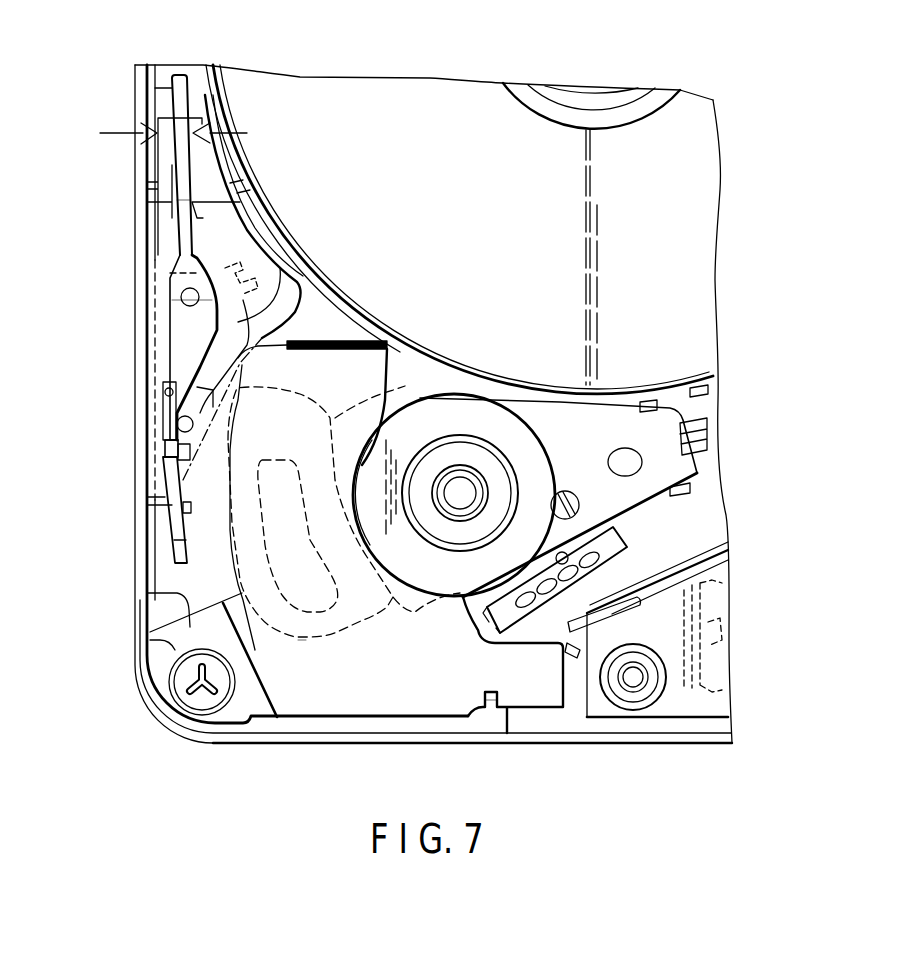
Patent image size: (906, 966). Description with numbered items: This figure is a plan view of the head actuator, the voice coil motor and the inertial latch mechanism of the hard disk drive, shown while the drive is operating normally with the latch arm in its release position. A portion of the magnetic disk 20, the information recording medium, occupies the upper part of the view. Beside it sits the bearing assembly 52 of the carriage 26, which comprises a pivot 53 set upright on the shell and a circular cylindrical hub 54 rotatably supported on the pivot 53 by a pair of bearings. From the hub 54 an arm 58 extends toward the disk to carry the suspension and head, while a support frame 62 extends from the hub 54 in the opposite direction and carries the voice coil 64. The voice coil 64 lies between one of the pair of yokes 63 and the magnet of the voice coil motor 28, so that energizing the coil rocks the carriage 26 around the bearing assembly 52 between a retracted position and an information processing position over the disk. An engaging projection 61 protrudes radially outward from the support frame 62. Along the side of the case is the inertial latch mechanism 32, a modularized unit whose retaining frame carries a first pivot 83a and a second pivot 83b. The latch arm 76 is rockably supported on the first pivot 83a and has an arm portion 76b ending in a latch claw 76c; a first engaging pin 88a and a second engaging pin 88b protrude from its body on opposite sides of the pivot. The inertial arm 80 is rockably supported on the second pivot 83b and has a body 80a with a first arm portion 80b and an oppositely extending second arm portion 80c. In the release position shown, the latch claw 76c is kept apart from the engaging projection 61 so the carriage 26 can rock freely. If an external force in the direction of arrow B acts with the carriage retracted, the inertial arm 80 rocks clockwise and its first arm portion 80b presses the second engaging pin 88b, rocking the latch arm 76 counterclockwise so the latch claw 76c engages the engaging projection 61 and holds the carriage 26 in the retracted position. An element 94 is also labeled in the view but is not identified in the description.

The magnetic disk 20 is at (694, 234).
The carriage 26 is at (590, 416).
The voice coil motor 28 is at (348, 676).
The inertial latch mechanism 32 is at (167, 361).
The bearing assembly 52 is at (447, 433).
The pivot 53 is at (480, 468).
The hub 54 is at (471, 412).
The arm 58 is at (623, 412).
The engaging projection 61 is at (202, 507).
The support frame 62 is at (414, 603).
The yokes 63 is at (465, 693).
The voice coil 64 is at (303, 620).
The latch arm 76 is at (157, 481).
The arm portion 76b is at (178, 513).
The latch claw 76c is at (176, 562).
The inertial arm 80 is at (188, 340).
The body 80a is at (178, 313).
The first arm portion 80b is at (170, 437).
The second arm portion 80c is at (180, 223).
The first pivot 83a is at (177, 423).
The second pivot 83b is at (181, 296).
The first engaging pin 88a is at (185, 447).
The second engaging pin 88b is at (166, 393).
The spring hook 94 is at (242, 292).